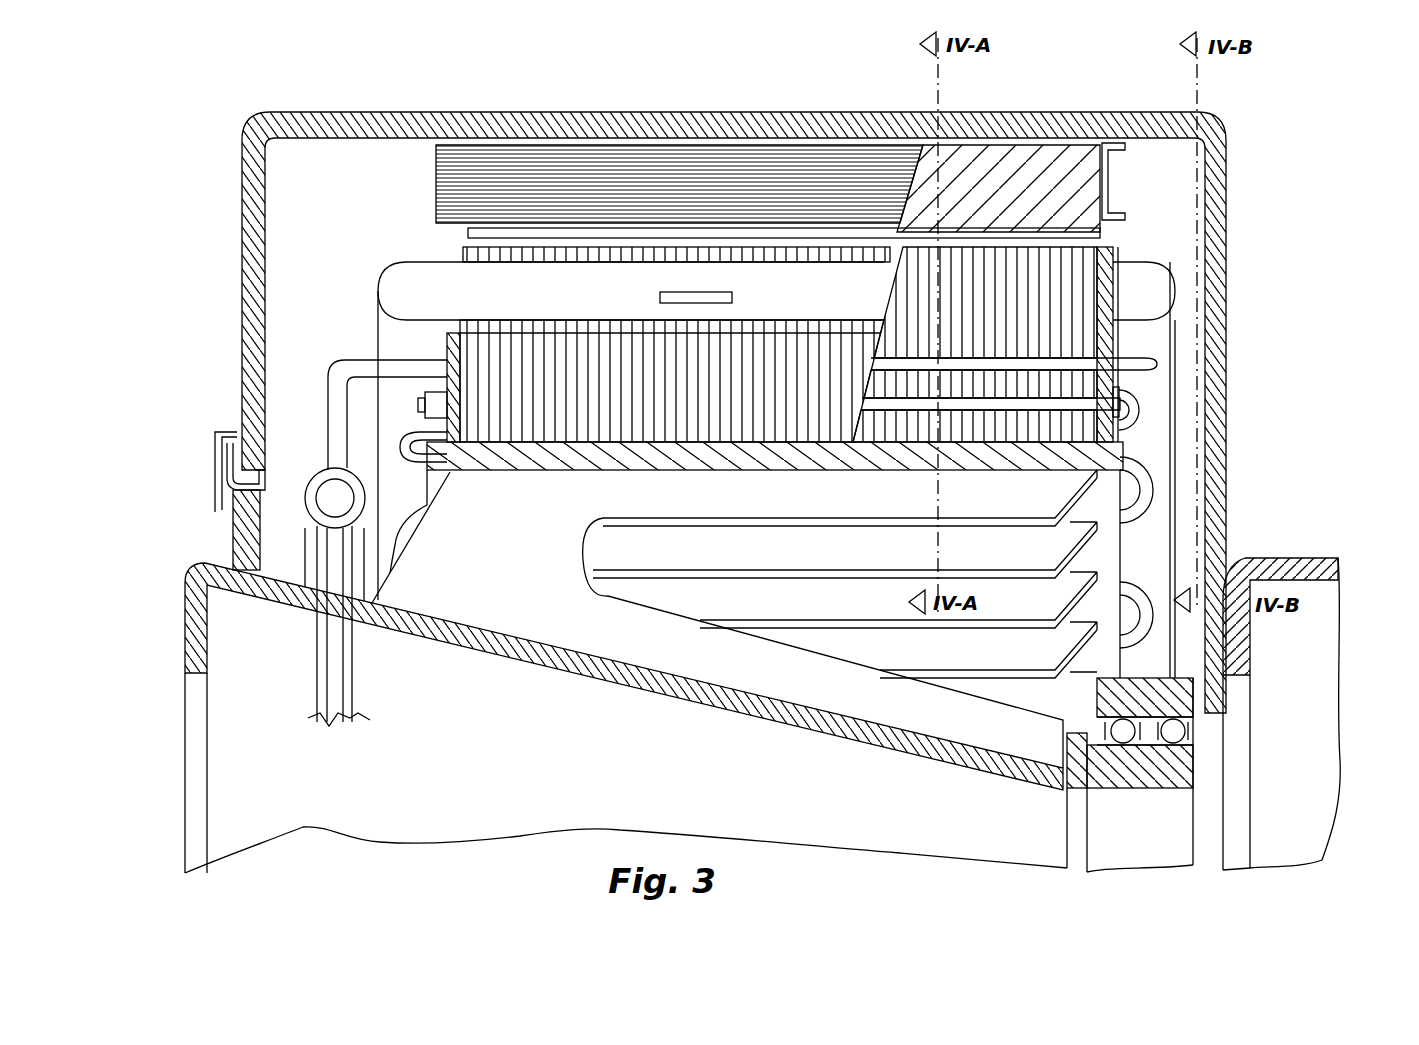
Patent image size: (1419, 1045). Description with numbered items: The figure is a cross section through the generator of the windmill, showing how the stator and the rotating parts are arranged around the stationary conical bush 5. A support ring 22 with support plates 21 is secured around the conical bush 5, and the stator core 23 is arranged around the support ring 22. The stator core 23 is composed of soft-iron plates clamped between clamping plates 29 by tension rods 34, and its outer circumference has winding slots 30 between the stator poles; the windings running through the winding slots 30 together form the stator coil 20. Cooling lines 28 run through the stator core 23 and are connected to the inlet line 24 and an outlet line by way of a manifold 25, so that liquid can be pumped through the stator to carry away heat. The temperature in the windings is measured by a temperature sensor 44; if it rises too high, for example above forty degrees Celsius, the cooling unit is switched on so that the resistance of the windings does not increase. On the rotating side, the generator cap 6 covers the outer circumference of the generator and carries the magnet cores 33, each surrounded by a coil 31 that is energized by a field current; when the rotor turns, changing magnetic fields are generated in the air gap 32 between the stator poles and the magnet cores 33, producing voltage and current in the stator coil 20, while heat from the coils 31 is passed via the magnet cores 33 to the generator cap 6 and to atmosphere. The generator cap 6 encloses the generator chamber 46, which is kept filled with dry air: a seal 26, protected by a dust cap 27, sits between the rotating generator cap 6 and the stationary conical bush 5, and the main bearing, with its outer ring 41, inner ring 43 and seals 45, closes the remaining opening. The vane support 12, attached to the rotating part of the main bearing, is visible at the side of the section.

The conical bush 5 is at (533, 660).
The generator cap 6 is at (400, 128).
The vane support 12 is at (1338, 575).
The stator coil 20 is at (398, 286).
The support plates 21 is at (787, 619).
The support ring 22 is at (560, 472).
The stator core 23 is at (1140, 262).
The inlet line 24 is at (317, 686).
The manifold 25 is at (314, 506).
The seal 26 is at (185, 488).
The dust cap 27 is at (215, 440).
The cooling lines 28 is at (328, 380).
The clamping plates 29 is at (450, 321).
The winding slots 30 is at (460, 250).
The coil 31 is at (576, 183).
The air gap 32 is at (848, 238).
The magnet cores 33 is at (1019, 172).
The tension rods 34 is at (1150, 430).
The outer ring 41 is at (1210, 705).
The inner ring 43 is at (1195, 778).
The temperature sensor 44 is at (704, 292).
The seals 45 is at (1185, 740).
The generator chamber 46 is at (306, 210).